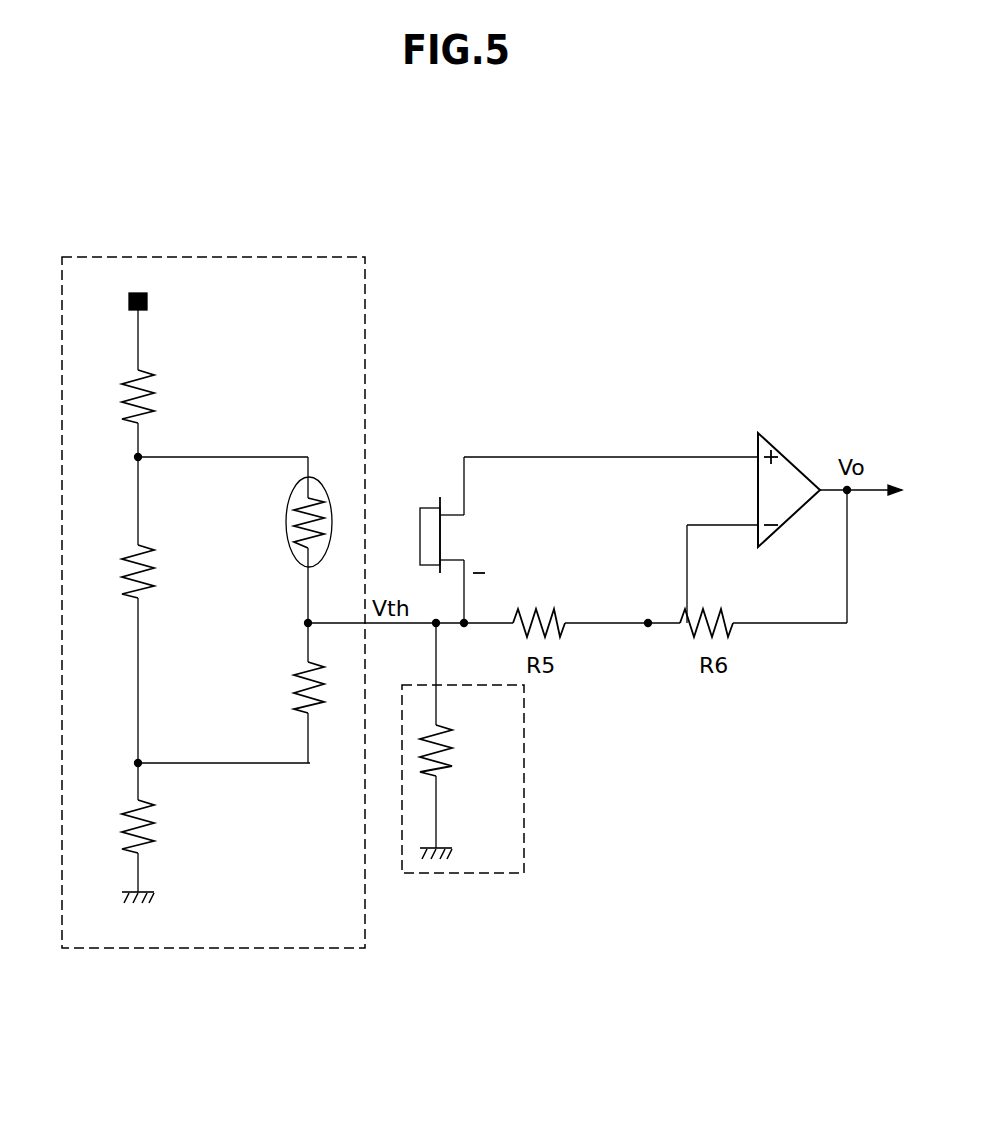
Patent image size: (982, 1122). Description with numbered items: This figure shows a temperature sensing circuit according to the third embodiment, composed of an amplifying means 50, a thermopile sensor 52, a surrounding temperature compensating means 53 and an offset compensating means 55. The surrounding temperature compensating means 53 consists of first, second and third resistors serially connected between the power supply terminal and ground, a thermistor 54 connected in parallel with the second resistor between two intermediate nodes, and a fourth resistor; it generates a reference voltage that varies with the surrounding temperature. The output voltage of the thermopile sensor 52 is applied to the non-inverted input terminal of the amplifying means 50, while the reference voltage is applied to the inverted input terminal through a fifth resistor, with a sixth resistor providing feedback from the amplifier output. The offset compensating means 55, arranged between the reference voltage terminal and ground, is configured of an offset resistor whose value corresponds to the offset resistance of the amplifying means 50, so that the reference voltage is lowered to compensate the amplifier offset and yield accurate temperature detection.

The amplifying means 50 is at (789, 476).
The thermopile sensor 52 is at (430, 512).
The surrounding temperature compensating means 53 is at (213, 633).
The thermistor Rth 54 is at (322, 490).
The offset compensating means 55 is at (475, 873).